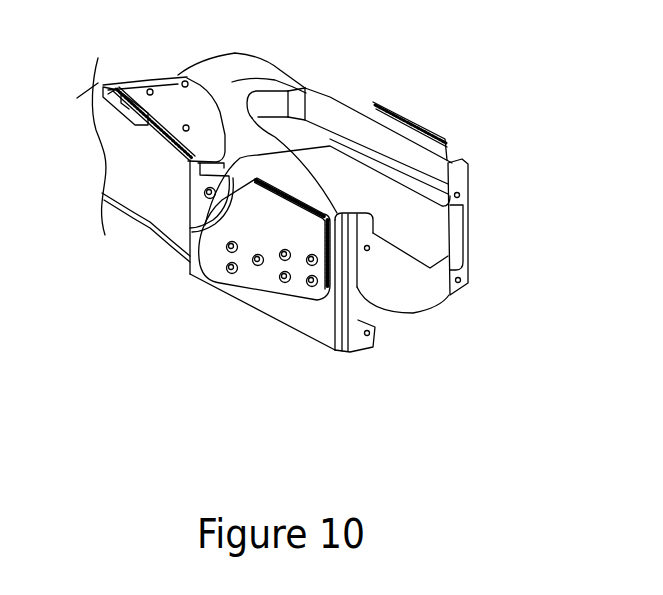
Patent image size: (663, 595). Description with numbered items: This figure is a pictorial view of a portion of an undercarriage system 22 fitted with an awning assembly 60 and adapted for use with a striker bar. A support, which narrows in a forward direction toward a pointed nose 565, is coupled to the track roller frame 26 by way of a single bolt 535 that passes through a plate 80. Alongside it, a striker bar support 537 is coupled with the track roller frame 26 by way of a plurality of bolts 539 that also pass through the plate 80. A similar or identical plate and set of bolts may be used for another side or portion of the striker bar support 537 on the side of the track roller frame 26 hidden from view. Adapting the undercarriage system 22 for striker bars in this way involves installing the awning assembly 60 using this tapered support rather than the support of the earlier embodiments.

The undercarriage system 22 is at (357, 87).
The track roller frame 26 is at (122, 193).
The awning assembly 60 is at (209, 86).
The plate 80 is at (316, 330).
The bolt 535 is at (204, 191).
The striker bar support 537 is at (430, 130).
The bolts 539 is at (229, 273).
The pointed nose 565 is at (271, 154).